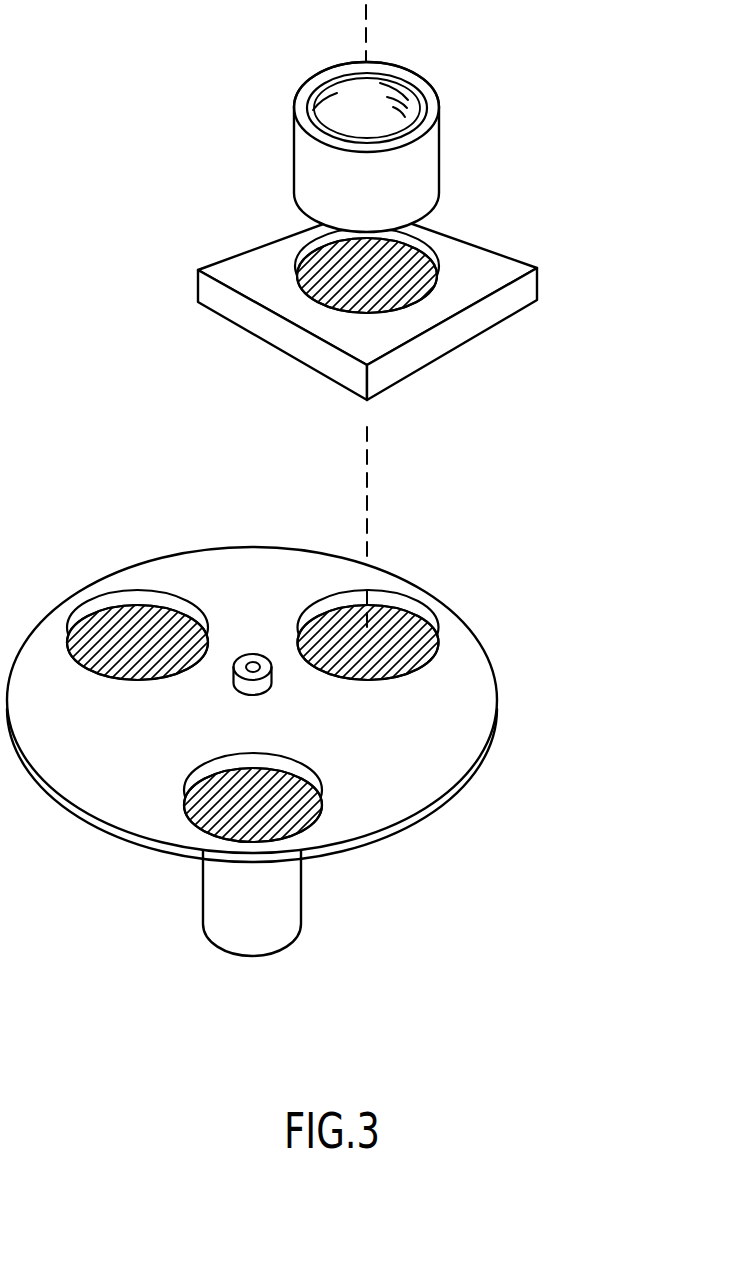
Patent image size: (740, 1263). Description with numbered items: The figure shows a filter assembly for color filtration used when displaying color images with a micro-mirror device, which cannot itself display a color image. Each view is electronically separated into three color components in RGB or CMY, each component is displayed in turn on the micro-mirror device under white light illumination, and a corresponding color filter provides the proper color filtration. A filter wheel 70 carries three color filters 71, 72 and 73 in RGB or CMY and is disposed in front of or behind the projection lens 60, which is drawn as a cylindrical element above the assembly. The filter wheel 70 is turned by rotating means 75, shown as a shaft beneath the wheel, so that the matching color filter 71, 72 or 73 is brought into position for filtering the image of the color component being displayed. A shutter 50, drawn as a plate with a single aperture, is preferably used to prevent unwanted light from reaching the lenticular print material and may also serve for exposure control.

The shutter 50 is at (470, 253).
The projection lens 60 is at (304, 158).
The filter wheel 70 is at (472, 702).
The color filter 71 is at (126, 614).
The color filter 72 is at (412, 614).
The color filter 73 is at (278, 828).
The rotating means 75 is at (264, 940).